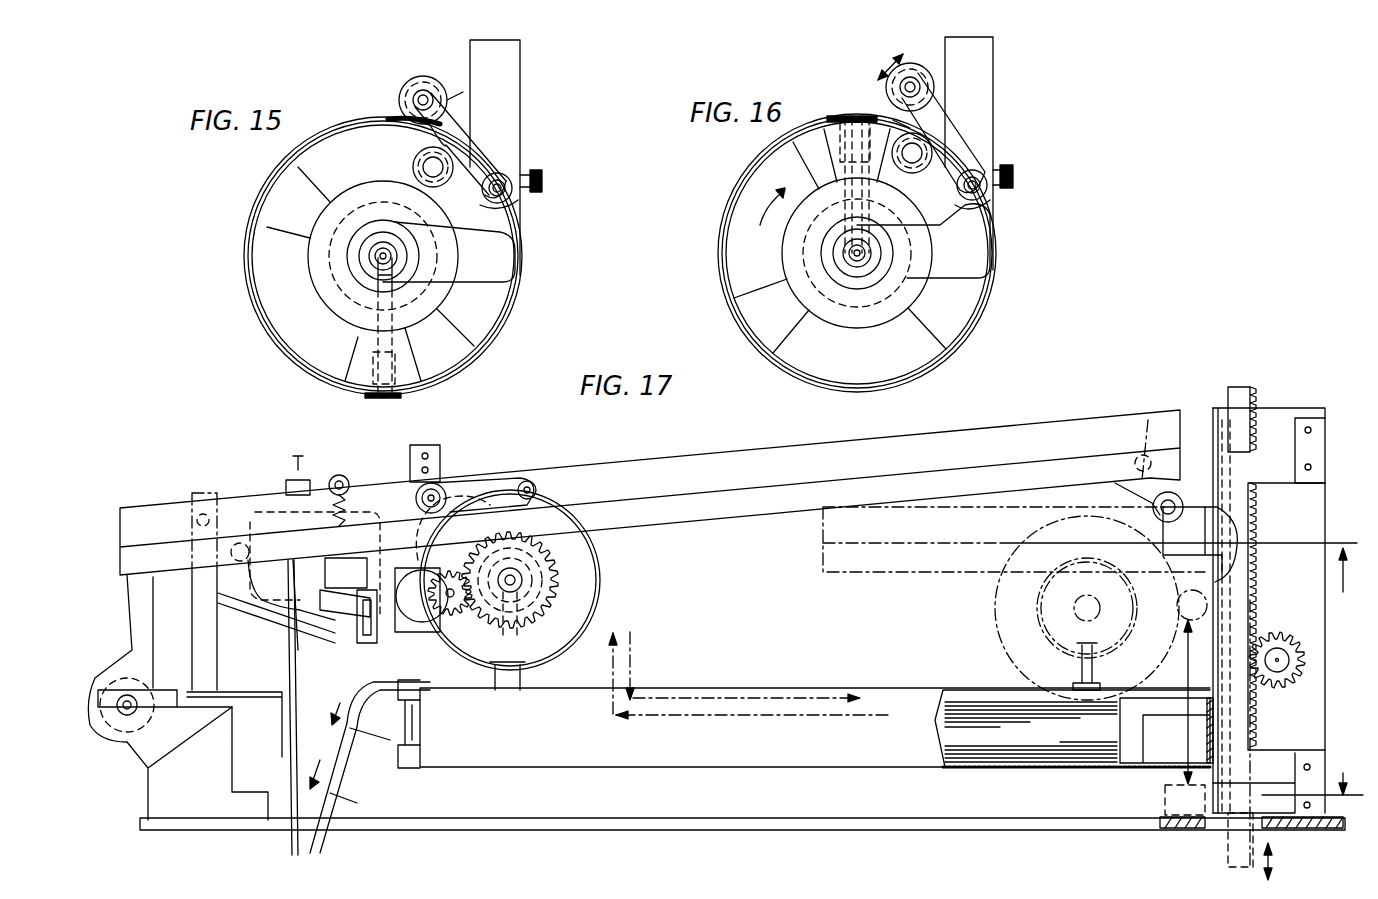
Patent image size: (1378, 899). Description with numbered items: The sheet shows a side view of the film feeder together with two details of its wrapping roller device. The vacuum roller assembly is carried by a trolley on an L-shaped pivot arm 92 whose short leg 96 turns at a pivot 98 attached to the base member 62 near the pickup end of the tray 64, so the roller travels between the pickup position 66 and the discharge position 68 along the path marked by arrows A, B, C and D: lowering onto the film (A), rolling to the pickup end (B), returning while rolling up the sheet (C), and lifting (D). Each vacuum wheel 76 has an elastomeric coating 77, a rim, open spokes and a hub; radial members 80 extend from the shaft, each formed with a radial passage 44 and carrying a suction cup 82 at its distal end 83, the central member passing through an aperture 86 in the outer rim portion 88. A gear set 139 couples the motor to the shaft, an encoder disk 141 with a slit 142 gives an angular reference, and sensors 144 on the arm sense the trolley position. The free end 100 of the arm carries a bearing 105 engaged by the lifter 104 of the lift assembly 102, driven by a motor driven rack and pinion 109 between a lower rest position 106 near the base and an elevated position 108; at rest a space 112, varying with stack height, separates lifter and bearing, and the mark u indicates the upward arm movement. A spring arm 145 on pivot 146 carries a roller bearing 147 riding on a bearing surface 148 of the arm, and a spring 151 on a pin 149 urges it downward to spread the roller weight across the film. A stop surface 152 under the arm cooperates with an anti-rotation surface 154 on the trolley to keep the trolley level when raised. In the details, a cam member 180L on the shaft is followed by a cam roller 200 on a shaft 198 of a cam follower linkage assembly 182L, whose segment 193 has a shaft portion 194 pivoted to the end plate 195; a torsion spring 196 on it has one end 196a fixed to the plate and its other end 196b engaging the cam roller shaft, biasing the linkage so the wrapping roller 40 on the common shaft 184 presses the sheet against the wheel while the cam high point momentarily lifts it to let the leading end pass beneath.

In FIG. 15, the wrapping roller 40 is at (426, 76).
In FIG. 16, the wrapping roller 40 is at (931, 93).
In FIG. 15, the radial passage 44 is at (362, 295).
In FIG. 16, the radial passage 44 is at (812, 181).
In FIG. 17, the base member 62 is at (152, 820).
In FIG. 17, the tray 64 is at (958, 768).
In FIG. 17, the pickup position 66 is at (1135, 770).
In FIG. 17, the discharge position 68 is at (467, 770).
In FIG. 15, the wheel member 76 is at (244, 296).
In FIG. 16, the wheel member 76 is at (985, 303).
In FIG. 15, the elastomeric coating 77 is at (300, 352).
In FIG. 15, the radial member 80 is at (440, 296).
In FIG. 15, the suction cup 82 is at (370, 397).
In FIG. 17, the suction cup 82 is at (500, 690).
In FIG. 17, the distal end 83 is at (522, 680).
In FIG. 15, the aperture 86 is at (405, 388).
In FIG. 15, the outer rim portion 88 is at (486, 325).
In FIG. 16, the outer rim portion 88 is at (822, 118).
In FIG. 17, the pivot arm 92 is at (1045, 418).
In FIG. 17, the short leg 96 is at (110, 660).
In FIG. 17, the pivot 98 is at (123, 722).
In FIG. 17, the free end 100 is at (1213, 435).
In FIG. 17, the lift assembly 102 is at (1238, 518).
In FIG. 17, the lifter 104 is at (1193, 535).
In FIG. 17, the bearing 105 is at (1000, 640).
In FIG. 17, the lower rest position 106 is at (1263, 786).
In FIG. 17, the elevated position 108 is at (1345, 580).
In FIG. 17, the motor driven rack and pinion 109 is at (1285, 632).
In FIG. 17, the space 112 is at (1183, 738).
In FIG. 17, the gear set 139 is at (455, 552).
In FIG. 17, the encoder disk 141 is at (590, 578).
In FIG. 17, the slit 142 is at (452, 614).
In FIG. 17, the sensors 144 is at (243, 498).
In FIG. 17, the spring arm 145 is at (496, 485).
In FIG. 17, the pivot 146 is at (537, 482).
In FIG. 17, the roller bearing 147 is at (426, 444).
In FIG. 17, the bearing surface 148 is at (590, 505).
In FIG. 17, the pin 149 is at (338, 475).
In FIG. 17, the spring 151 is at (262, 512).
In FIG. 17, the stop surface 152 is at (342, 568).
In FIG. 17, the anti-rotation surface 154 is at (298, 632).
In FIG. 15, the cam member 180L is at (370, 202).
In FIG. 16, the cam member 180L is at (829, 320).
In FIG. 15, the cam follower linkage assembly 182L is at (460, 119).
In FIG. 16, the cam follower linkage assembly 182L is at (974, 163).
In FIG. 15, the common shaft 184 is at (447, 100).
In FIG. 15, the segment 193 is at (510, 180).
In FIG. 16, the segment 193 is at (990, 180).
In FIG. 15, the shaft portion 194 is at (506, 197).
In FIG. 16, the shaft portion 194 is at (985, 205).
In FIG. 15, the end plate 195 is at (521, 260).
In FIG. 16, the end plate 195 is at (995, 47).
In FIG. 15, the torsion spring 196 is at (478, 177).
In FIG. 16, the torsion spring 196 is at (985, 228).
In FIG. 15, the spring end 196a is at (545, 178).
In FIG. 15, the spring end 196b is at (402, 118).
In FIG. 16, the spring end 196b is at (905, 128).
In FIG. 15, the cam roller shaft 198 is at (452, 246).
In FIG. 16, the cam roller shaft 198 is at (948, 150).
In FIG. 15, the cam roller 200 is at (413, 160).
In FIG. 16, the cam roller 200 is at (932, 146).
In FIG. 17, the path A is at (635, 652).
In FIG. 17, the path B is at (745, 696).
In FIG. 17, the path C is at (715, 716).
In FIG. 17, the path D is at (608, 665).
In FIG. 17, the direction u is at (1222, 370).